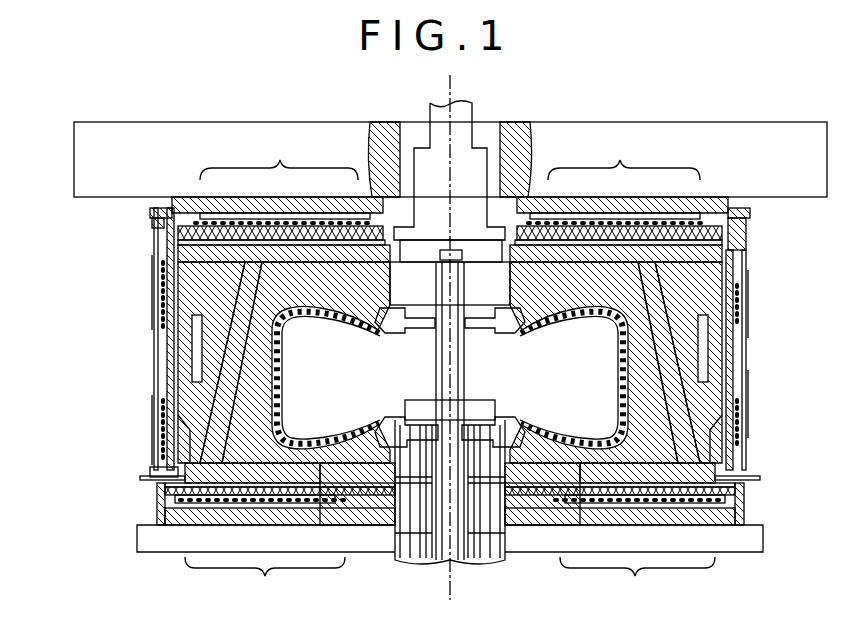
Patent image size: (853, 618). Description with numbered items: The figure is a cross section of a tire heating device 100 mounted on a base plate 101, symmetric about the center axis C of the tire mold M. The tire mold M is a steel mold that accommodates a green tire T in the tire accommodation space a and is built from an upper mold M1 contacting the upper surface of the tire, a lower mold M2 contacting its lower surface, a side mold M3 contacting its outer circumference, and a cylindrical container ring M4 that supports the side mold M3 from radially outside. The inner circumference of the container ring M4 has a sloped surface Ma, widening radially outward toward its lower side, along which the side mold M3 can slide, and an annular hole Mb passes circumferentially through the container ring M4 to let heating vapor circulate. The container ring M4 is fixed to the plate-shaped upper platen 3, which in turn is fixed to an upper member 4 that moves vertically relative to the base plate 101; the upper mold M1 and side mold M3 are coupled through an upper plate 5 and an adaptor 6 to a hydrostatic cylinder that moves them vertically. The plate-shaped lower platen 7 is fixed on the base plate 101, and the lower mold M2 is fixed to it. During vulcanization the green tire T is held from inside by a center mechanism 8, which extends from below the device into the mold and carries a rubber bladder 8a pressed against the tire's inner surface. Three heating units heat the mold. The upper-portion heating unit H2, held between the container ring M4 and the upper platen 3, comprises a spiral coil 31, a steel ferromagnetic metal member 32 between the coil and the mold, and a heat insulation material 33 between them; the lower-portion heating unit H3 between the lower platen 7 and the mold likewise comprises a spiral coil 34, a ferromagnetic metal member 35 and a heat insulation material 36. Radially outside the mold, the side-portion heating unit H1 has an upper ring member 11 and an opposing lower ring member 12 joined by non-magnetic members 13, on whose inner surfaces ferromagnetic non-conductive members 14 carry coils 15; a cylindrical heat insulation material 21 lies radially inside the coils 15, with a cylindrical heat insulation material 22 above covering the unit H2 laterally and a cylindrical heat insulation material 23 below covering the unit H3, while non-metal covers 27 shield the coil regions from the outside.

The tire heating device 100 is at (612, 84).
The center axis C is at (450, 87).
The upper member 4 is at (74, 154).
The adaptor 6 is at (414, 160).
The upper platen 3 is at (160, 208).
The upper plate 5 is at (290, 213).
The upper ring member 11 is at (152, 220).
The heat insulation material 33 is at (178, 234).
The ferromagnetic metal member 32 is at (178, 247).
The coil 31 is at (450, 161).
The coils 15 is at (158, 275).
The cylindrical heat insulation material 22 is at (746, 230).
The upper-portion heating unit H2 is at (738, 217).
The container ring M4 is at (185, 262).
The side mold M3 is at (250, 270).
The upper mold M1 is at (326, 290).
The lower mold M2 is at (362, 502).
The tire mold M is at (508, 290).
The annular hole Mb is at (195, 324).
The sloped surface Ma is at (215, 430).
The green tire T is at (283, 358).
The tire accommodation space a is at (338, 396).
The bladder 8a is at (362, 327).
The center mechanism 8 is at (430, 568).
The side-portion heating unit H1 is at (128, 345).
The non-magnetic members 13 is at (160, 357).
The ferromagnetic non-conductive members 14 is at (154, 380).
The heat insulation material 21 is at (740, 362).
The covers 27 is at (749, 312).
The lower ring member 12 is at (150, 474).
The ferromagnetic metal member 35 is at (162, 484).
The heat insulation material 36 is at (165, 494).
The lower platen 7 is at (175, 516).
The base plate 101 is at (137, 542).
The cylindrical heat insulation material 23 is at (748, 520).
The lower-portion heating unit H3 is at (748, 507).
The coil 34 is at (450, 577).